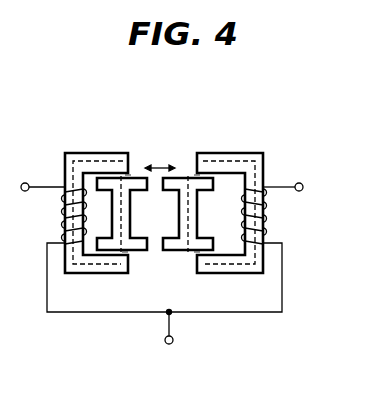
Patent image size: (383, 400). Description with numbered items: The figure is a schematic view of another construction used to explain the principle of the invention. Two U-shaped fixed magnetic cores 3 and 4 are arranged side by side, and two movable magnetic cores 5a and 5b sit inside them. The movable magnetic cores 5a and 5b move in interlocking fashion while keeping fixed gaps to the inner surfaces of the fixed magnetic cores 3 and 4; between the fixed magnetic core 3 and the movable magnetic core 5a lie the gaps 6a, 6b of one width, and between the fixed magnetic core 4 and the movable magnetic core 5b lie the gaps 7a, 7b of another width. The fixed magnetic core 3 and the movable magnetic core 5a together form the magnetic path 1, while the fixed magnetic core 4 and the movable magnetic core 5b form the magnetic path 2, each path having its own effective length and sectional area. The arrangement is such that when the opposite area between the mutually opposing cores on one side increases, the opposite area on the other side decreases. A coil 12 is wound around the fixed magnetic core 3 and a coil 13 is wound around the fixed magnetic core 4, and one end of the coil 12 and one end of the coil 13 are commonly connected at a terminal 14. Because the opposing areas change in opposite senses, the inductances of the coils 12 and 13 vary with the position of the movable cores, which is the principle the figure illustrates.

The magnetic path 1 is at (86, 266).
The magnetic path 2 is at (223, 265).
The U-shaped fixed magnetic core 3 is at (93, 155).
The U-shaped fixed magnetic core 4 is at (235, 155).
The movable magnetic core 5a is at (122, 221).
The movable magnetic core 5b is at (188, 221).
The gap 6a is at (129, 172).
The gap 6b is at (124, 254).
The gap 7a is at (197, 175).
The gap 7b is at (196, 252).
The coil 12 is at (65, 202).
The coil 13 is at (252, 210).
The terminal 14 is at (169, 344).